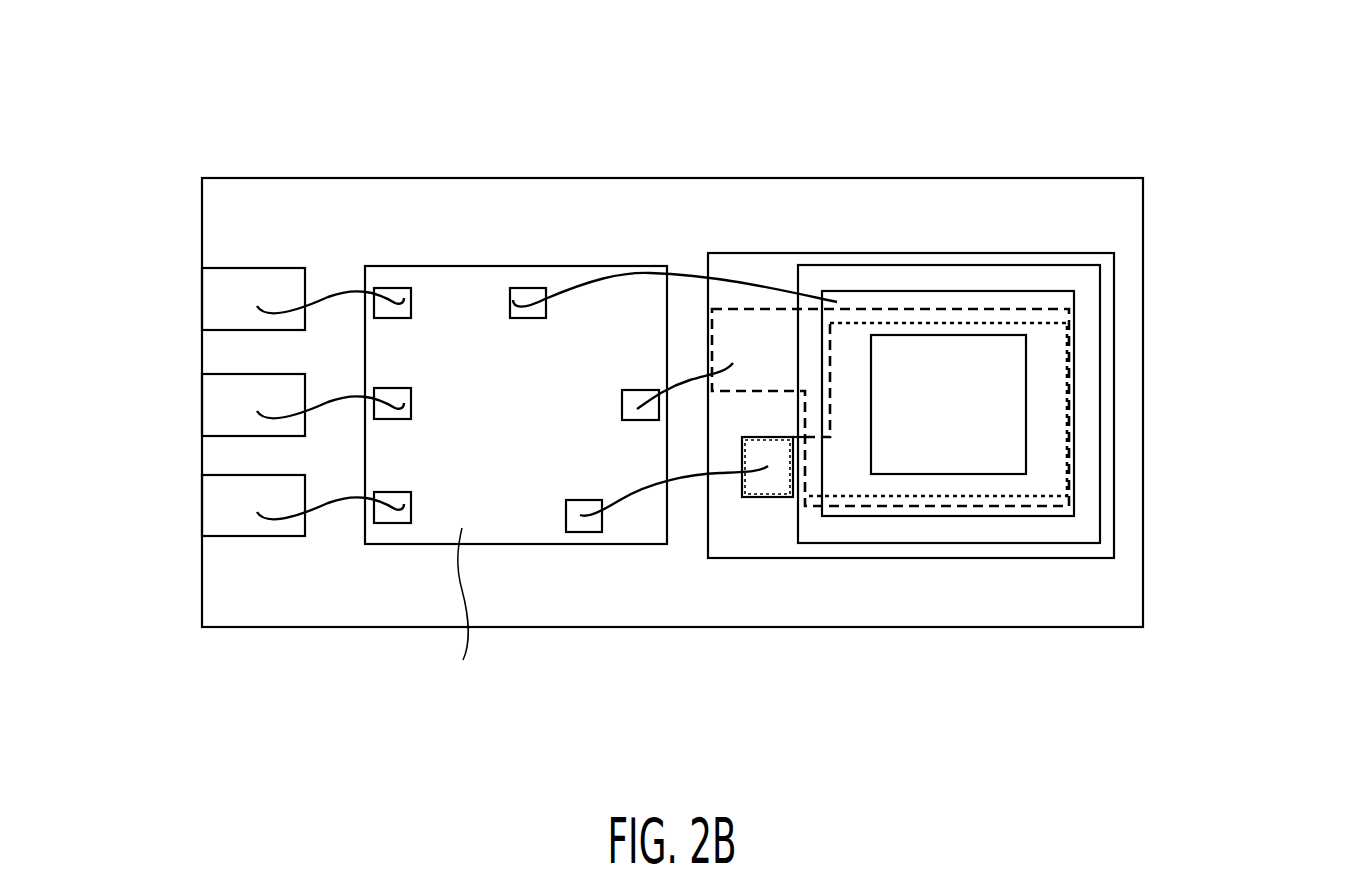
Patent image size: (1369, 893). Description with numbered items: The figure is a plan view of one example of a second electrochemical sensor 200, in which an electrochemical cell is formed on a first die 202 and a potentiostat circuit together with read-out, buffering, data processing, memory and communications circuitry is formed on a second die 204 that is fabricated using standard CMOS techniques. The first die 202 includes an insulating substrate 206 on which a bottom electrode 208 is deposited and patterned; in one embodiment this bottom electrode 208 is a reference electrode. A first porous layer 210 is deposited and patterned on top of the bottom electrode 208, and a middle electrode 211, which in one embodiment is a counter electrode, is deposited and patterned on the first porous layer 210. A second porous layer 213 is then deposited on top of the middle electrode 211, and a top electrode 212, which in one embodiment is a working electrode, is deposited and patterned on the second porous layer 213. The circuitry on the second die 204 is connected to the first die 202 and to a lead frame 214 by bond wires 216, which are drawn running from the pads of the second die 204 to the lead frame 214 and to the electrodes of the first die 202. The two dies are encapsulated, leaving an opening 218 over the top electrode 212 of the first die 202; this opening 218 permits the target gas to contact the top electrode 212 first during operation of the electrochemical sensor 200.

The second electrochemical sensor 200 is at (185, 152).
The first die 202 is at (838, 212).
The second die 204 is at (520, 212).
The insulating substrate 206 is at (1068, 258).
The bottom electrode 208 is at (763, 327).
The first porous layer 210 is at (1076, 356).
The middle electrode 211 is at (765, 488).
The top electrode 212 is at (943, 297).
The second porous layer 213 is at (1084, 307).
The lead frame 214 is at (215, 501).
The bond wires 216 is at (684, 482).
The opening 218 is at (1006, 432).